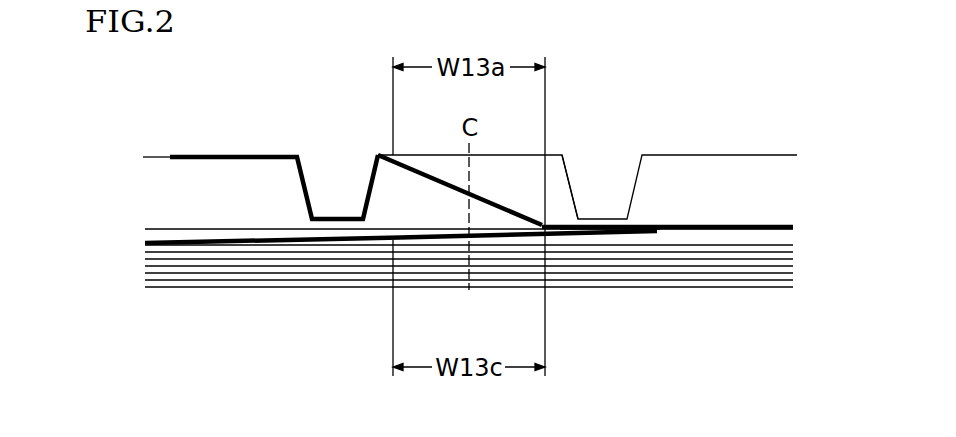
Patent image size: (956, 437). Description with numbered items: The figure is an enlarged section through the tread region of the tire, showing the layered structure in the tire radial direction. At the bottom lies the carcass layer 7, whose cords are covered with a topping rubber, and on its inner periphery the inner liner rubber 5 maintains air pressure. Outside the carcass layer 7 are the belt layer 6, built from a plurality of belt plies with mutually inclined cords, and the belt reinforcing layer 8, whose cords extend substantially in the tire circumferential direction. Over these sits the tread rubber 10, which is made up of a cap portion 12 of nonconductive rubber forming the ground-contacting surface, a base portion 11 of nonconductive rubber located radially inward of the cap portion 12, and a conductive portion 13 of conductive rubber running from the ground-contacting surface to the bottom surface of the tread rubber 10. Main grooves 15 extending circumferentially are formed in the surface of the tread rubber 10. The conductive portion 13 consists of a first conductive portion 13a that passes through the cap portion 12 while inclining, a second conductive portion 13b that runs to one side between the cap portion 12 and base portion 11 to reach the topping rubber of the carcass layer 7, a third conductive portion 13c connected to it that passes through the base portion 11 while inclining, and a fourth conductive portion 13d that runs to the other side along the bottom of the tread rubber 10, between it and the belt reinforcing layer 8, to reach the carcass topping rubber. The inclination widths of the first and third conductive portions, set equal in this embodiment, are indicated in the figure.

The inner liner rubber 5 is at (264, 285).
The belt layer 6 is at (660, 263).
The carcass layer 7 is at (325, 268).
The belt reinforcing layer 8 is at (752, 253).
The tread rubber 10 is at (770, 155).
The base portion 11 is at (195, 229).
The cap portion 12 is at (258, 170).
The conductive portion 13 is at (598, 232).
The first conductive portion 13a is at (430, 177).
The second conductive portion 13b is at (727, 225).
The third conductive portion 13c is at (500, 233).
The fourth conductive portion 13d is at (212, 243).
The main groove 15 is at (303, 170).